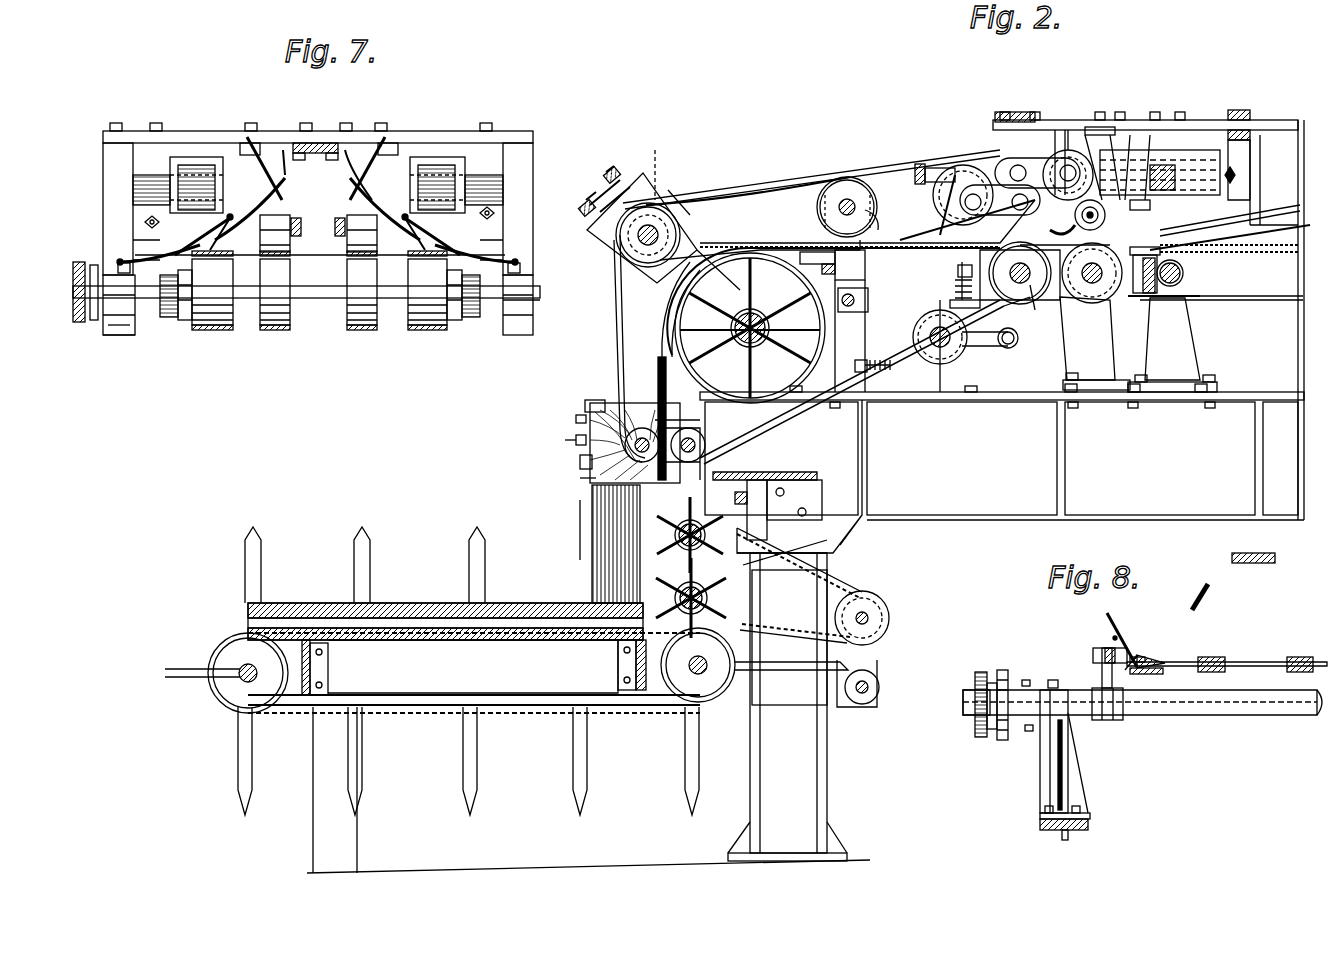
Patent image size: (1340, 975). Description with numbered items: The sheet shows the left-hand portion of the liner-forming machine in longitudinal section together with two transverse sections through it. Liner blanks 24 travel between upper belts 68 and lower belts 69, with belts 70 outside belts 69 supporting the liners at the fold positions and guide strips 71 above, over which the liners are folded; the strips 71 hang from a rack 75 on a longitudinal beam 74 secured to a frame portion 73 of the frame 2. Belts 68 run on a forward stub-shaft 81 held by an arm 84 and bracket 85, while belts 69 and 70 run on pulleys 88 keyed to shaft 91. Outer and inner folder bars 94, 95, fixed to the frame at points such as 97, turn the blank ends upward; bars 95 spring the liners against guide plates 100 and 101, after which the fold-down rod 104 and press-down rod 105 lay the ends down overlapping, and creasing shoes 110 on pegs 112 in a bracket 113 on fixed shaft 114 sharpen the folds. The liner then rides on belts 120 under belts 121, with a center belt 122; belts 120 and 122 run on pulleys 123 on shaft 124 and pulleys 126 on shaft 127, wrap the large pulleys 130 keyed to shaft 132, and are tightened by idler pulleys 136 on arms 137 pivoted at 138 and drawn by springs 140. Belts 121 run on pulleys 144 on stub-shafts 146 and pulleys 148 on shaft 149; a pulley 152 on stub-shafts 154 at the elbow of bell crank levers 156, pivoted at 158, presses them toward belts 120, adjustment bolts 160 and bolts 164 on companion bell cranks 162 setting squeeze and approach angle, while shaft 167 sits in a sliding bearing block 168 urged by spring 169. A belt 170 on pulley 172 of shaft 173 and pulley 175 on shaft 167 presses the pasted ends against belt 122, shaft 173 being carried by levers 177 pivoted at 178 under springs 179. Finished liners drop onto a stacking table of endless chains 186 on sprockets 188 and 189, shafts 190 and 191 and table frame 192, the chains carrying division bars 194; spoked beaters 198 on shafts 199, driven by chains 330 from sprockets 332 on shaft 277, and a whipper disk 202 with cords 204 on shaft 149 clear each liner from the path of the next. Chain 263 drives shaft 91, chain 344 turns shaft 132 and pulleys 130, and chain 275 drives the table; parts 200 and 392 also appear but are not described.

In FIG. 7, the frame 2 is at (118, 340).
In FIG. 2, the frame 2 is at (1160, 508).
In FIG. 7, the liner blank 24 is at (395, 286).
In FIG. 7, the upper belts 68 is at (272, 200).
In FIG. 2, the upper belts 68 is at (1278, 195).
In FIG. 8, the upper belts 68 is at (1280, 660).
In FIG. 7, the lower belts 69 is at (355, 255).
In FIG. 2, the lower belts 69 is at (1260, 302).
In FIG. 8, the lower belts 69 is at (1287, 670).
In FIG. 7, the belts 70 is at (212, 318).
In FIG. 8, the belts 70 is at (1163, 669).
In FIG. 7, the guide strips 71 is at (260, 238).
In FIG. 8, the guide strips 71 is at (1168, 660).
In FIG. 7, the frame portion 73 is at (455, 130).
In FIG. 2, the frame portion 73 is at (1000, 118).
In FIG. 7, the longitudinal beam 74 is at (316, 142).
In FIG. 2, the longitudinal beam 74 is at (1235, 112).
In FIG. 8, the longitudinal beam 74 is at (1270, 553).
In FIG. 2, the rack 75 is at (1258, 170).
In FIG. 2, the forward stub-shaft 81 is at (1192, 177).
In FIG. 2, the arm 84 is at (1170, 305).
In FIG. 2, the bracket 85 is at (1142, 145).
In FIG. 7, the pulleys 88 is at (319, 292).
In FIG. 2, the pulleys 88 is at (1110, 295).
In FIG. 7, the shaft 91 is at (510, 310).
In FIG. 2, the shaft 91 is at (1092, 300).
In FIG. 7, the outer folder bars 94 is at (205, 175).
In FIG. 2, the outer folder bars 94 is at (1270, 235).
In FIG. 8, the outer folder bars 94 is at (1120, 635).
In FIG. 7, the inner folder bars 95 is at (240, 225).
In FIG. 2, the inner folder bars 95 is at (1264, 250).
In FIG. 8, the inner folder bars 95 is at (1135, 658).
In FIG. 7, the attachment point 97 is at (118, 254).
In FIG. 7, the guide plate 100 is at (350, 150).
In FIG. 2, the guide plate 100 is at (1195, 162).
In FIG. 7, the guide plate 101 is at (287, 175).
In FIG. 8, the guide plate 101 is at (1205, 596).
In FIG. 7, the fold-down rod 104 is at (392, 140).
In FIG. 2, the fold-down rod 104 is at (925, 235).
In FIG. 7, the press-down rod 105 is at (270, 165).
In FIG. 7, the creasing shoes 110 is at (318, 187).
In FIG. 8, the creasing shoes 110 is at (1105, 652).
In FIG. 2, the pegs 112 is at (1165, 250).
In FIG. 8, the pegs 112 is at (1100, 680).
In FIG. 2, the bracket 113 is at (1165, 300).
In FIG. 8, the bracket 113 is at (1122, 720).
In FIG. 2, the fixed shaft 114 is at (1185, 274).
In FIG. 8, the fixed shaft 114 is at (1205, 713).
In FIG. 7, the belts 120 is at (185, 320).
In FIG. 7, the belts 121 is at (180, 145).
In FIG. 2, the belts 121 is at (614, 338).
In FIG. 2, the belt 122 is at (905, 330).
In FIG. 7, the pulleys 123 is at (125, 335).
In FIG. 2, the pulleys 123 is at (1034, 305).
In FIG. 2, the shaft 124 is at (1010, 285).
In FIG. 2, the pulleys 126 is at (660, 445).
In FIG. 2, the shaft 127 is at (700, 447).
In FIG. 2, the large pulleys 130 is at (766, 258).
In FIG. 2, the shaft 132 is at (770, 318).
In FIG. 2, the idler pulleys 136 is at (935, 360).
In FIG. 2, the arms 137 is at (1003, 348).
In FIG. 2, the pivot 138 is at (1020, 344).
In FIG. 2, the springs 140 is at (955, 287).
In FIG. 2, the pulleys 144 is at (1075, 150).
In FIG. 2, the stub-shafts 146 is at (1105, 135).
In FIG. 2, the pulleys 148 is at (612, 410).
In FIG. 2, the shaft 149 is at (583, 428).
In FIG. 7, the pulley 152 is at (175, 160).
In FIG. 2, the pulley 152 is at (950, 175).
In FIG. 2, the stub-shafts 154 is at (958, 268).
In FIG. 2, the bell crank levers 156 is at (980, 185).
In FIG. 2, the pivot points 158 is at (1030, 160).
In FIG. 2, the adjustment bolts 160 is at (945, 168).
In FIG. 2, the bell crank levers 162 is at (1070, 150).
In FIG. 7, the adjustment bolts 164 is at (145, 215).
In FIG. 2, the adjustment bolts 164 is at (1060, 230).
In FIG. 2, the shaft 167 is at (675, 195).
In FIG. 2, the sliding bearing block 168 is at (650, 169).
In FIG. 2, the spring 169 is at (608, 185).
In FIG. 2, the belt 170 is at (886, 201).
In FIG. 2, the pulley 172 is at (820, 190).
In FIG. 2, the shaft 173 is at (845, 200).
In FIG. 2, the pulley 175 is at (680, 185).
In FIG. 2, the levers 177 is at (866, 264).
In FIG. 2, the pivot 178 is at (855, 296).
In FIG. 2, the springs 179 is at (878, 368).
In FIG. 2, the endless chains 186 is at (240, 640).
In FIG. 2, the sprockets 188 is at (225, 695).
In FIG. 2, the sprockets 189 is at (685, 690).
In FIG. 2, the shaft 190 is at (240, 668).
In FIG. 2, the shaft 191 is at (665, 700).
In FIG. 2, the table frame 192 is at (318, 762).
In FIG. 2, the division bars 194 is at (258, 545).
In FIG. 2, the spoked beaters 198 is at (640, 535).
In FIG. 2, the shafts 199 is at (720, 560).
In FIG. 2, the star wheel 200 is at (720, 600).
In FIG. 2, the whipper disk 202 is at (585, 456).
In FIG. 2, the cords 204 is at (594, 468).
In FIG. 7, the chain 263 is at (110, 340).
In FIG. 8, the chain 263 is at (1027, 677).
In FIG. 8, the chain 275 is at (980, 740).
In FIG. 2, the shaft 277 is at (870, 619).
In FIG. 2, the chains 330 is at (845, 565).
In FIG. 2, the sprockets 332 is at (880, 600).
In FIG. 7, the chain 344 is at (78, 322).
In FIG. 8, the sprocket 392 is at (1003, 742).